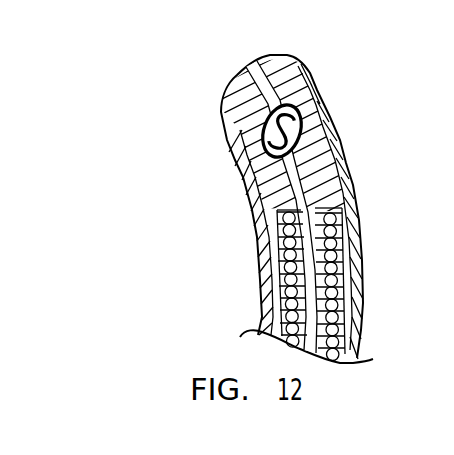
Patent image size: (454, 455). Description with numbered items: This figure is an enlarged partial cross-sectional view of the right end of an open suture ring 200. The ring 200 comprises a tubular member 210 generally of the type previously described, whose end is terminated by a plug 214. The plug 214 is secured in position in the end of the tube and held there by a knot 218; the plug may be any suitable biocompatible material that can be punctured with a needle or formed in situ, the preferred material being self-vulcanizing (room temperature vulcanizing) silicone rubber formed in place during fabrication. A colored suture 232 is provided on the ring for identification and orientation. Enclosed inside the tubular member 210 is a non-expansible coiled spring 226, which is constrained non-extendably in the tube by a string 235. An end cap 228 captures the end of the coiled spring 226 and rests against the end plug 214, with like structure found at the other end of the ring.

The ring 200 is at (216, 149).
The tubular member 210 is at (338, 152).
The plug 214 is at (230, 80).
The knot 218 is at (283, 102).
The non-expansible coiled spring 226 is at (277, 269).
The end cap 228 is at (273, 208).
The colored suture 232 is at (330, 112).
The string 235 is at (313, 252).